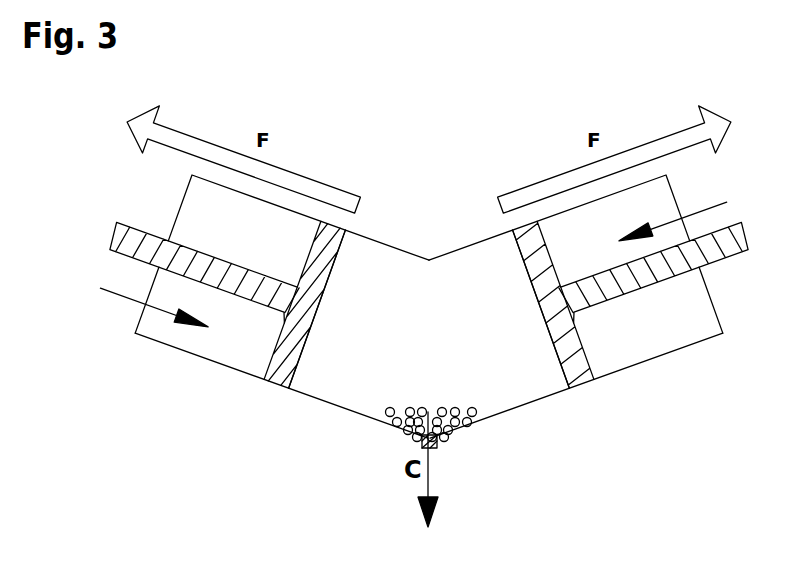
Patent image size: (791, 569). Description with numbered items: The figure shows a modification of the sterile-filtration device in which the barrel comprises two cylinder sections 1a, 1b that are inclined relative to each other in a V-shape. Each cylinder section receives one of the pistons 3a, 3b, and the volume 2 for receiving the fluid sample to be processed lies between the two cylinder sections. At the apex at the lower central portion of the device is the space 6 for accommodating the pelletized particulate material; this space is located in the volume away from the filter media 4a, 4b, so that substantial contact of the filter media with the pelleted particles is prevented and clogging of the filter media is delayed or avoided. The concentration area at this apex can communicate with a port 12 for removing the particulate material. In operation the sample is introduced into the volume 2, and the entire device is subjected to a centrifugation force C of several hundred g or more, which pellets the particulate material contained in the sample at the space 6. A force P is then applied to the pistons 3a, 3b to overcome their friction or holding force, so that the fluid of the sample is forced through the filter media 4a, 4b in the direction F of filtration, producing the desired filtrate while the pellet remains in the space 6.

The cylinder section 1a is at (690, 345).
The cylinder section 1b is at (165, 347).
The volume 2 is at (347, 395).
The piston 3a is at (582, 380).
The piston 3b is at (278, 375).
The filter medium 4a is at (343, 278).
The filter medium 4b is at (515, 278).
The space for accommodating pelletized particulate material 6 is at (400, 433).
The port 12 is at (437, 442).